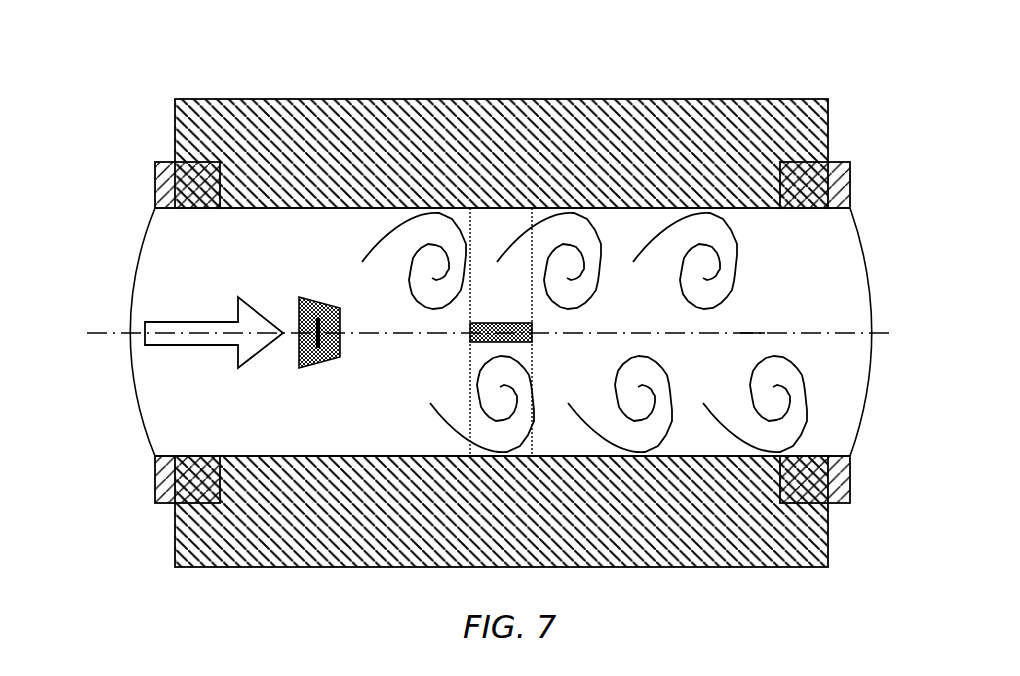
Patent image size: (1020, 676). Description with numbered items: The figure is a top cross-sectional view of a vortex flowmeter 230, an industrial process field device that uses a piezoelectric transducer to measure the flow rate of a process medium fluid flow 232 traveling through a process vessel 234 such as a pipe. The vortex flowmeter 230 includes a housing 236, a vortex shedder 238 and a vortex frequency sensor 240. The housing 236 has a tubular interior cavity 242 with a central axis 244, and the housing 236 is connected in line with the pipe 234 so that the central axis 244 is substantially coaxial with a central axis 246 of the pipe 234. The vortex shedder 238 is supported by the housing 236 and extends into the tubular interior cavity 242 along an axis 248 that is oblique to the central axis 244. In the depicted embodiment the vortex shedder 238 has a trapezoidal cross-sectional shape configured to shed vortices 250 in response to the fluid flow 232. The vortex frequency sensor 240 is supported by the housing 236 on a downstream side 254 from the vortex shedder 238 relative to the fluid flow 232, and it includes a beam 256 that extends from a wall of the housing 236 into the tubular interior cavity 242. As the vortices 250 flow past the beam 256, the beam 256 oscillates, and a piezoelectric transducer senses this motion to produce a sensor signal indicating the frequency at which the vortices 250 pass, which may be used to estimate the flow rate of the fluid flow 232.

The vortex flowmeter 230 is at (146, 57).
The fluid flow 232 is at (190, 342).
The process vessel 234 is at (162, 188).
The housing 236 is at (190, 122).
The vortex shedder 238 is at (312, 366).
The vortex frequency sensor 240 is at (433, 356).
The interior cavity 242 is at (282, 438).
The central axis 244 is at (752, 333).
The central axis of the pipe 246 is at (102, 328).
The axis 248 is at (302, 320).
The vortices 250 is at (410, 288).
The downstream side 254 is at (398, 455).
The beam 256 is at (525, 342).